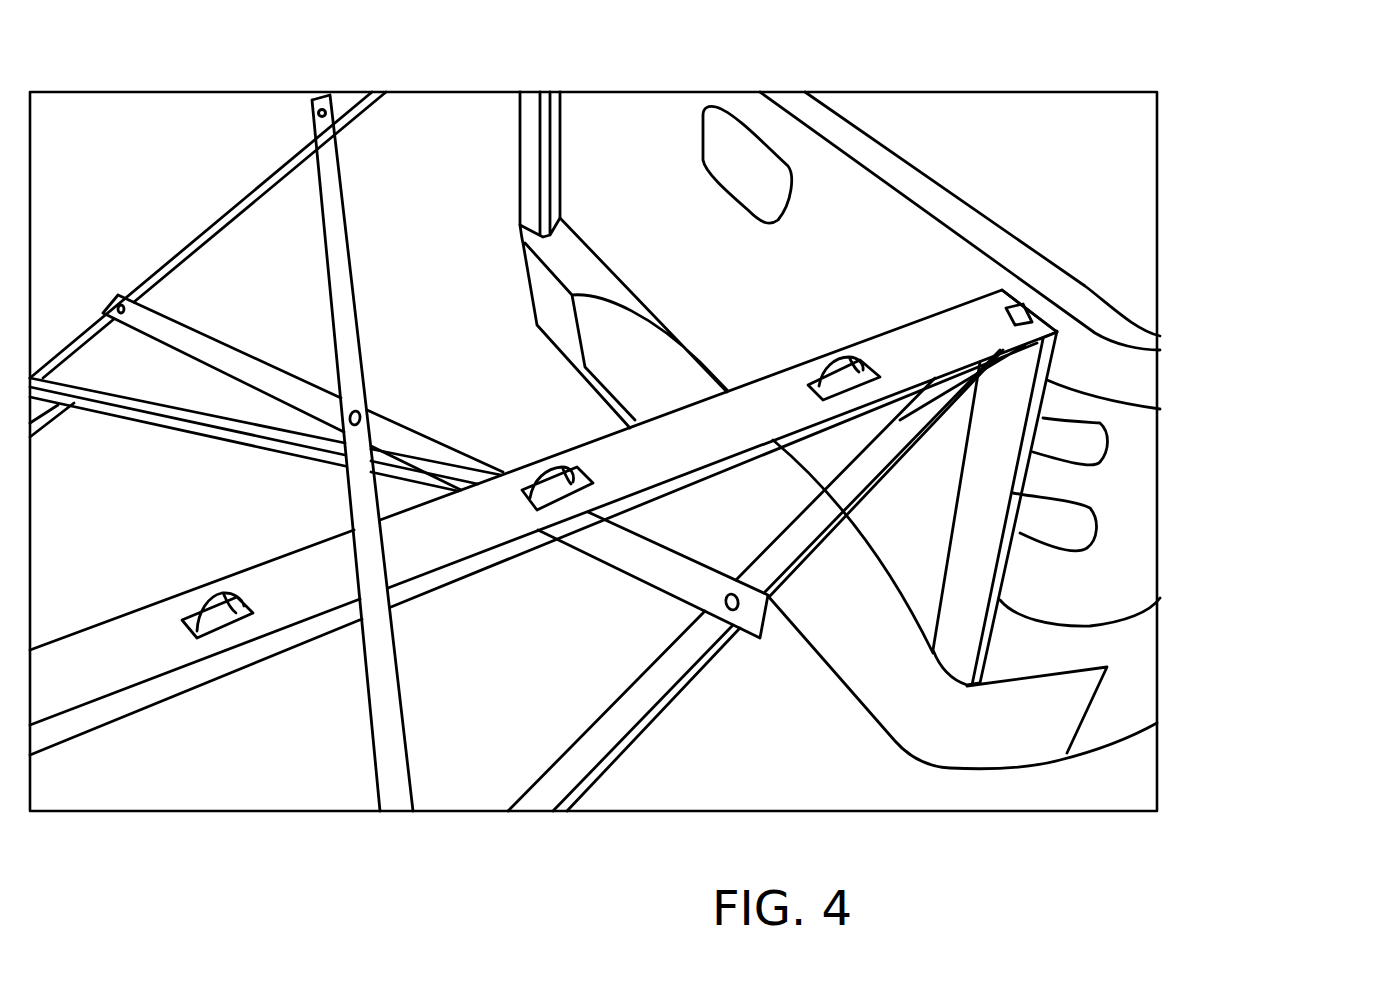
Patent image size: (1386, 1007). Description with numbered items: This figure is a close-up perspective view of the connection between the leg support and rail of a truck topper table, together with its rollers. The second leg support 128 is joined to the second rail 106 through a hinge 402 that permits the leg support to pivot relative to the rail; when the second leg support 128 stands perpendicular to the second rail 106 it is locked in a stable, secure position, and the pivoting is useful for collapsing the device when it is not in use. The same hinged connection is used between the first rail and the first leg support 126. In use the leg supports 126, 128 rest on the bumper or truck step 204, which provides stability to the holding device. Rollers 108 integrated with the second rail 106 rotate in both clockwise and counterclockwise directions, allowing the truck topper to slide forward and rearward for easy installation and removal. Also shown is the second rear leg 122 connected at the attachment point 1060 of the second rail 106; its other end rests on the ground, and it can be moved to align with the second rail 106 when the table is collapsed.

The second rail 106 is at (150, 665).
The rollers 108 is at (245, 600).
The second rear leg 122 is at (890, 462).
The first leg support 126 is at (540, 147).
The second leg support 128 is at (1000, 463).
The bumper or truck step 204 is at (1047, 713).
The hinge 402 is at (1032, 314).
The attachment point 1060 is at (1057, 337).